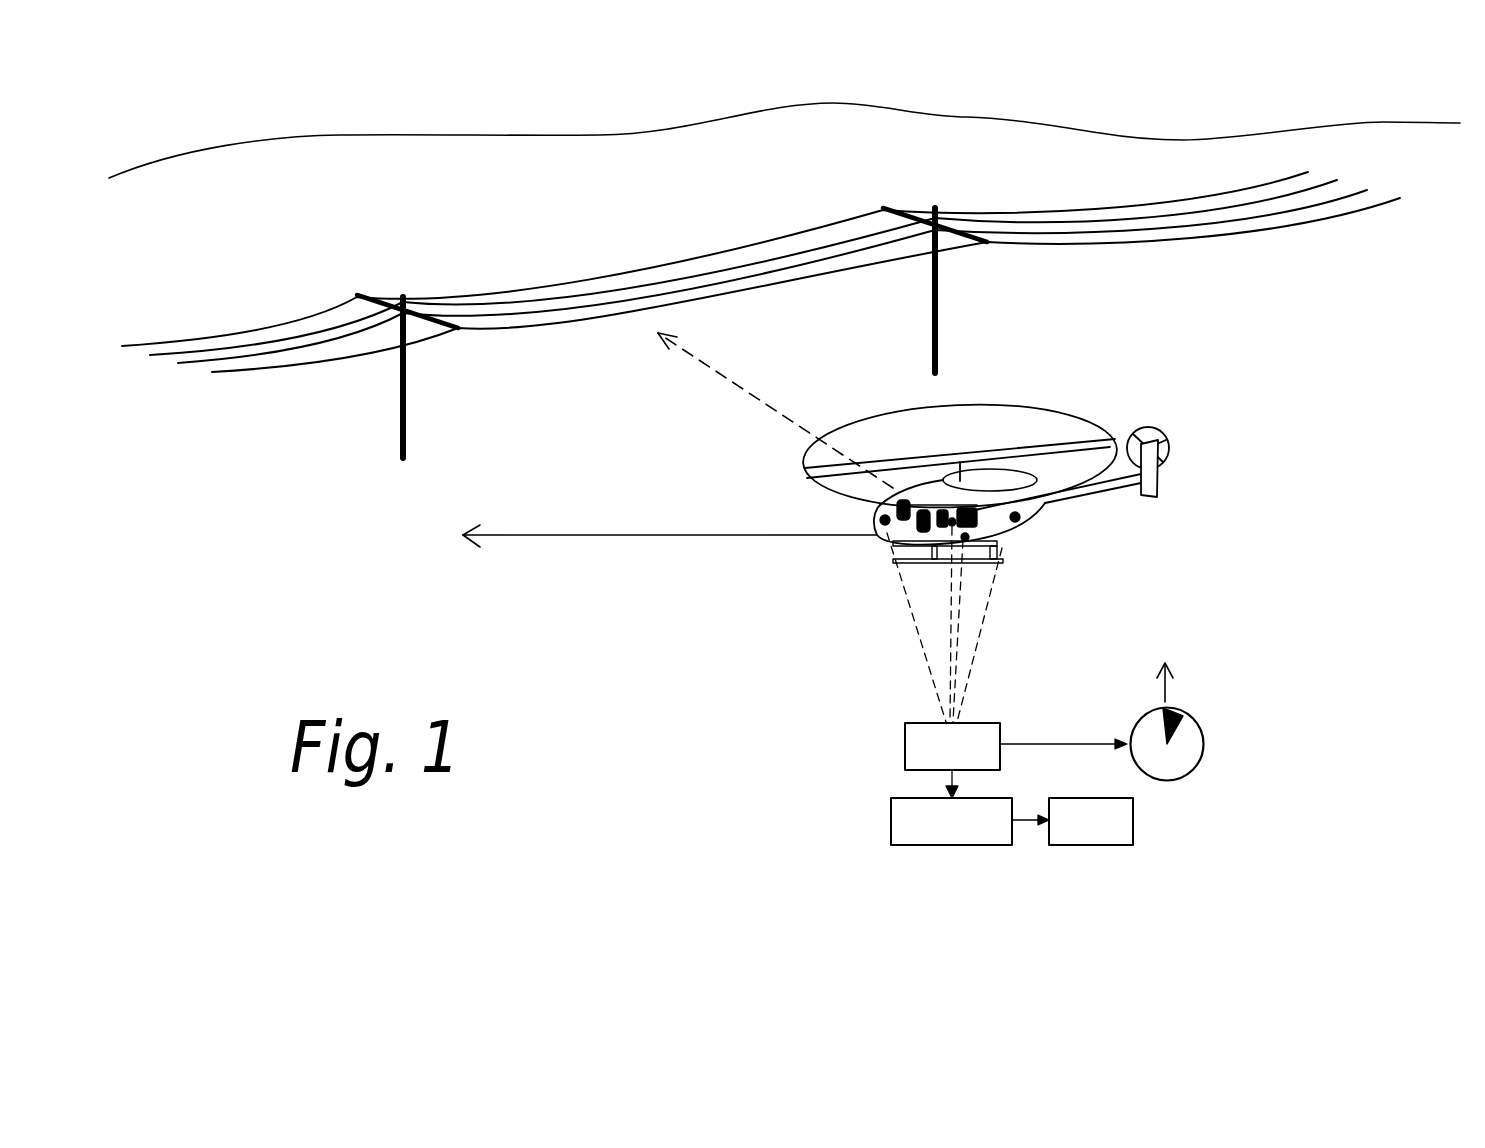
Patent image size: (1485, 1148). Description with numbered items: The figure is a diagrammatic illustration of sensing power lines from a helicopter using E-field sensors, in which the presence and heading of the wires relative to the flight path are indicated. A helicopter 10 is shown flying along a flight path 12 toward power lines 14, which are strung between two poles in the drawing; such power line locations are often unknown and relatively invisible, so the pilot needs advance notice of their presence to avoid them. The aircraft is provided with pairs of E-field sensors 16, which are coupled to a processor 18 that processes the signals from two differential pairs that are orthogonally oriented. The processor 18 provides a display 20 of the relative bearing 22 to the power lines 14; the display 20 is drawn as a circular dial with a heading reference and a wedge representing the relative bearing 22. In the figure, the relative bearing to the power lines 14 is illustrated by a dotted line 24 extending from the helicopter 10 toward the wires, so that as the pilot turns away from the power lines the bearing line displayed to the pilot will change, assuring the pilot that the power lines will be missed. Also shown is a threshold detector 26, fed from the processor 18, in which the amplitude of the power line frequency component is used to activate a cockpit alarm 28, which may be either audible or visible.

The helicopter 10 is at (1016, 410).
The flight path 12 is at (620, 535).
The power lines 14 is at (1242, 250).
The E-field sensors 16 is at (1087, 563).
The processor 18 is at (968, 721).
The display 20 is at (1167, 780).
The relative bearing 22 is at (1178, 730).
The dotted line 24 is at (738, 388).
The threshold detector 26 is at (891, 828).
The cockpit alarm 28 is at (1078, 845).